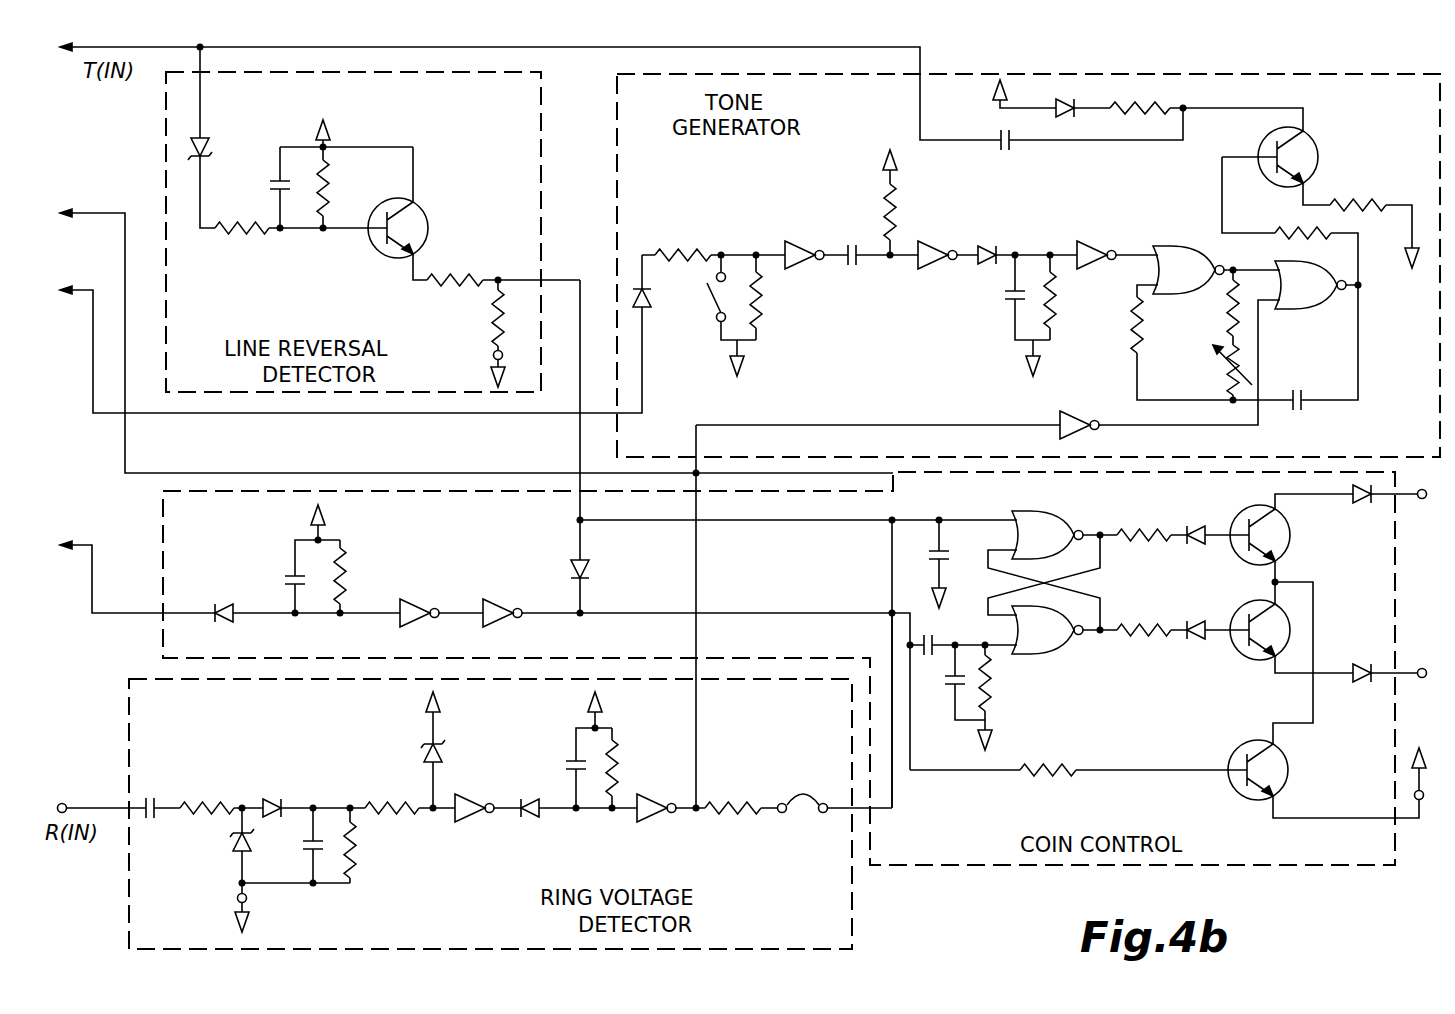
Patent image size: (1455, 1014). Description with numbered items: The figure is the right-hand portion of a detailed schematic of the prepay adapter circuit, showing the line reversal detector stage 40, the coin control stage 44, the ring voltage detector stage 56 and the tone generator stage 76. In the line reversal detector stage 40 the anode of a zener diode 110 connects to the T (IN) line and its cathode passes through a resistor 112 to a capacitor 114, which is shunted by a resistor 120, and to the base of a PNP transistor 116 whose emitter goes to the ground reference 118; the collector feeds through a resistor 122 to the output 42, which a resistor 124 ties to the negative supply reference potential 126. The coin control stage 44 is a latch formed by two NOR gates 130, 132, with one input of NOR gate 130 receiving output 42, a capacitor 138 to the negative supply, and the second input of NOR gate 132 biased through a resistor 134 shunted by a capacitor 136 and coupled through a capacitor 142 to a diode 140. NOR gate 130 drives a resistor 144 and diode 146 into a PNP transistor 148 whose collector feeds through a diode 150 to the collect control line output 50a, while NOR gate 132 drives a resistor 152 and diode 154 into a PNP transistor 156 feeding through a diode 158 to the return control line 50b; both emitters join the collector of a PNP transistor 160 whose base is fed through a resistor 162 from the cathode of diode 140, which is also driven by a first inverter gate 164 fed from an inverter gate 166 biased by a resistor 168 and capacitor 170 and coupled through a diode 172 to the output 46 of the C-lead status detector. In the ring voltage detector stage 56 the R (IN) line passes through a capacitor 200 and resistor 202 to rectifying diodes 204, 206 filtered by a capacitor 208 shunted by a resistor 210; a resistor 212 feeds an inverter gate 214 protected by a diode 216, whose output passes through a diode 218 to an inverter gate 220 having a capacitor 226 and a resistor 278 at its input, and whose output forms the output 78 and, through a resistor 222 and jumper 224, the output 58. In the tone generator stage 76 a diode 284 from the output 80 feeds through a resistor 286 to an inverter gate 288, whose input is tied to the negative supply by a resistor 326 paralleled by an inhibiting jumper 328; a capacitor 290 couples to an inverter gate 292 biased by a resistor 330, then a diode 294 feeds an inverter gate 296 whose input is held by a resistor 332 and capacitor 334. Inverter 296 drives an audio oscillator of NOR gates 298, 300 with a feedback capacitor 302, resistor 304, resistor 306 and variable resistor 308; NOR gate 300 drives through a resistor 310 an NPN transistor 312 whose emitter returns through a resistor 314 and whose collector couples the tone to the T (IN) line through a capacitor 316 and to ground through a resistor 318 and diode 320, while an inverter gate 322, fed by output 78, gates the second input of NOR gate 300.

The line reversal detector stage 40 is at (166, 144).
The output of the line reversal detector stage 42 is at (560, 280).
The coin control stage 44 is at (1180, 866).
The output of the C-lead status detector stage 46 is at (92, 595).
The collect control line output 50a is at (1423, 499).
The return control line 50b is at (1424, 668).
The ring voltage detector stage 56 is at (852, 942).
The output of the ring voltage detector stage 58 is at (856, 812).
The tone generator stage 76 is at (617, 126).
The output of the ring voltage detector stage 78 is at (696, 648).
The output of the loop current status detector stage 80 is at (120, 420).
The zener diode 110 is at (208, 142).
The resistor 112 is at (244, 234).
The capacitor 114 is at (270, 192).
The PNP transistor 116 is at (427, 222).
The ground reference potential 118 is at (328, 138).
The resistor 120 is at (330, 204).
The resistor 122 is at (452, 274).
The resistor 124 is at (490, 320).
The negative supply reference potential 126 is at (492, 360).
The NOR gate 130 is at (1064, 514).
The NOR gate 132 is at (1028, 656).
The resistor 134 is at (996, 692).
The capacitor 136 is at (950, 694).
The capacitor 138 is at (966, 552).
The diode 140 is at (570, 572).
The capacitor 142 is at (932, 640).
The resistor 144 is at (1176, 528).
The diode 146 is at (1194, 542).
The PNP transistor 148 is at (1280, 553).
The diode 150 is at (1360, 504).
The resistor 152 is at (1140, 632).
The diode 154 is at (1198, 644).
The PNP transistor 156 is at (1262, 660).
The diode 158 is at (1358, 680).
The PNP transistor 160 is at (1242, 792).
The resistor 162 is at (1072, 776).
The first inverter gate 164 is at (508, 623).
The inverter gate 166 is at (428, 608).
The resistor 168 is at (346, 576).
The capacitor 170 is at (290, 572).
The diode 172 is at (226, 624).
The capacitor 200 is at (158, 816).
The resistor 202 is at (214, 784).
The diode 204 is at (232, 848).
The diode 206 is at (292, 784).
The capacitor 208 is at (304, 852).
The resistor 210 is at (358, 852).
The resistor 212 is at (384, 800).
The inverter gate 214 is at (478, 796).
The diode 216 is at (424, 752).
The diode 218 is at (534, 816).
The inverter gate 220 is at (648, 818).
The resistor 222 is at (728, 816).
The selective connection arrangement 224 is at (812, 796).
The capacitor 226 is at (570, 762).
The resistor 278 is at (618, 762).
The diode 284 is at (648, 316).
The resistor 286 is at (700, 228).
The inverter gate 288 is at (812, 212).
The capacitor 290 is at (850, 262).
The inverter gate 292 is at (938, 270).
The diode 294 is at (984, 246).
The inverter gate 296 is at (1096, 244).
The NOR gate 298 is at (1188, 248).
The NOR gate 300 is at (1322, 302).
The capacitor 302 is at (1316, 372).
The resistor 304 is at (1133, 346).
The resistor 306 is at (1220, 312).
The variable resistor 308 is at (1222, 372).
The resistor 310 is at (1298, 222).
The NPN transistor 312 is at (1316, 142).
The resistor 314 is at (1354, 198).
The capacitor 316 is at (1012, 150).
The resistor 318 is at (1150, 104).
The diode 320 is at (1066, 118).
The inverter gate 322 is at (1042, 422).
The resistor 326 is at (763, 320).
The selective connection arrangement 328 is at (712, 298).
The resistor 330 is at (894, 210).
The resistor 332 is at (1054, 306).
The capacitor 334 is at (1008, 306).